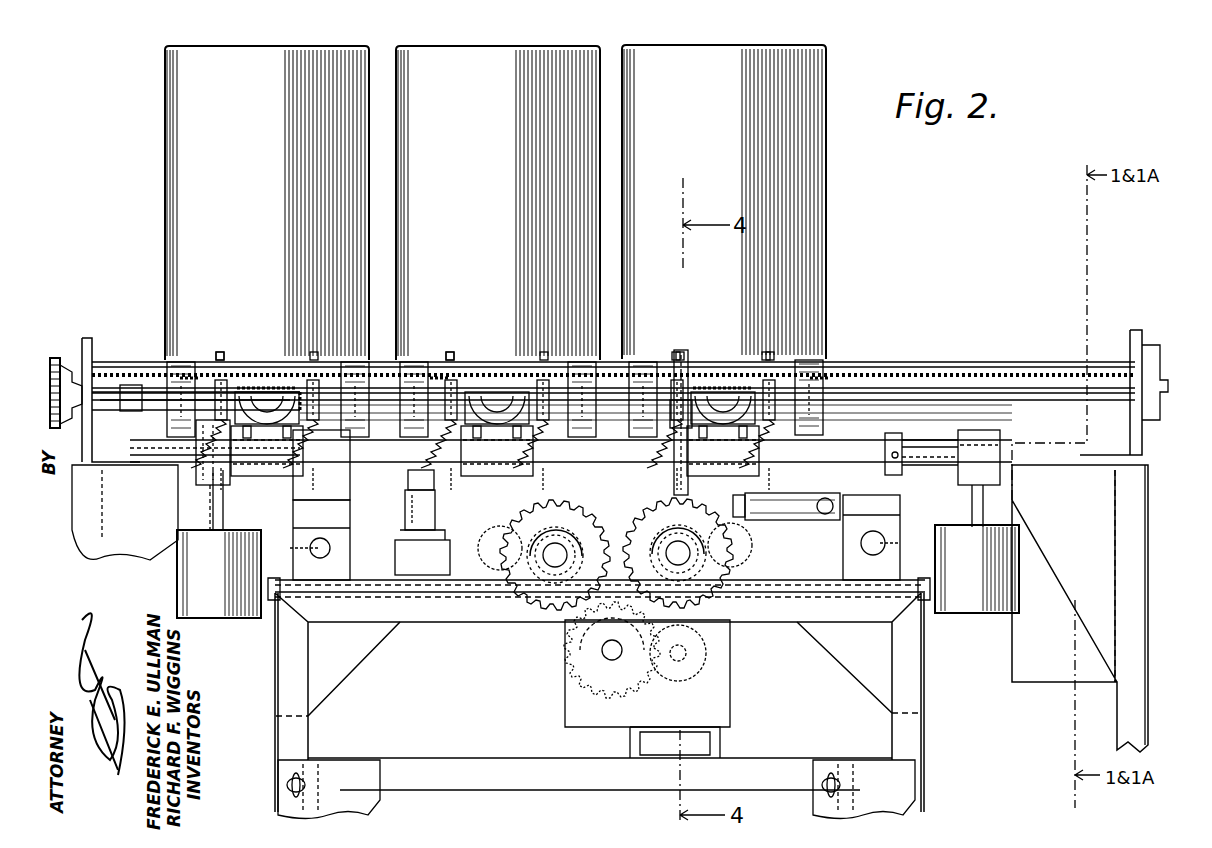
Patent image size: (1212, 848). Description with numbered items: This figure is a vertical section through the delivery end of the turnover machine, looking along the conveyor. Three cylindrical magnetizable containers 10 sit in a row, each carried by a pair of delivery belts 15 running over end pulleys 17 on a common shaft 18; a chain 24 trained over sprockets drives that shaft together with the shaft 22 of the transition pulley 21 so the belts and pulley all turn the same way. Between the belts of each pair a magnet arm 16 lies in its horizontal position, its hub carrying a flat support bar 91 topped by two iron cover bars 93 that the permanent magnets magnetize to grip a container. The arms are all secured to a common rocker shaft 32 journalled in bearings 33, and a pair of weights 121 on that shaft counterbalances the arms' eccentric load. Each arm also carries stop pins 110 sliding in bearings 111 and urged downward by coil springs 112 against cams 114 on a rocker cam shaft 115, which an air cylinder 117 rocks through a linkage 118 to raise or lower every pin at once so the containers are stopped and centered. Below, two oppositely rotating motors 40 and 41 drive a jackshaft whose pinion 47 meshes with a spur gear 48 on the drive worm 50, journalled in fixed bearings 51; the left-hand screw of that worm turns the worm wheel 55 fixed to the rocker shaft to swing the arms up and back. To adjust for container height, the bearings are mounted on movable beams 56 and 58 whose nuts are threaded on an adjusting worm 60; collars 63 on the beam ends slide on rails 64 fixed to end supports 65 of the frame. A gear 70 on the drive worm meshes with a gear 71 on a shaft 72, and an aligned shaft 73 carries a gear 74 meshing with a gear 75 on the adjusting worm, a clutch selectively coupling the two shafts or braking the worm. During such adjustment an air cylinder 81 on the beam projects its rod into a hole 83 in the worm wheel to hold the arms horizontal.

The containers 10 is at (165, 72).
The delivery belts 15 is at (170, 357).
The magnet arm 16 is at (262, 394).
The end pulleys 17 is at (160, 392).
The common shaft 18 is at (1000, 348).
The transition pulley 21 is at (105, 360).
The shaft of the transition pulley 22 is at (1108, 350).
The chain 24 is at (56, 358).
The rocker shaft 32 is at (958, 430).
The bearings 33 is at (903, 425).
The motor 40 is at (735, 653).
The motor 41 is at (712, 665).
The pinion 47 is at (718, 698).
The spur gear 48 is at (725, 630).
The drive worm 50 is at (692, 563).
The fixed bearings 51 is at (732, 610).
The worm wheel 55 is at (676, 350).
The movable beam 56 is at (268, 608).
The movable beam 58 is at (403, 622).
The adjusting worm 60 is at (555, 560).
The collars 63 is at (900, 515).
The rails 64 is at (320, 548).
The fixed end supports 65 is at (335, 590).
The gear 70 is at (740, 556).
The gear 71 is at (575, 652).
The shaft 72 is at (604, 647).
The shaft 73 is at (602, 653).
The gear 74 is at (550, 658).
The gear 75 is at (500, 555).
The air cylinder 81 is at (828, 505).
The hole 83 is at (646, 536).
The support bar 91 is at (220, 452).
The cover bars 93 is at (282, 382).
The stop pins 110 is at (221, 352).
The slide bearings 111 is at (197, 383).
The coil springs 112 is at (210, 424).
The cams 114 is at (210, 465).
The rocker cam shaft 115 is at (445, 495).
The air cylinder 117 is at (402, 546).
The linkage 118 is at (405, 506).
The weights 121 is at (222, 618).